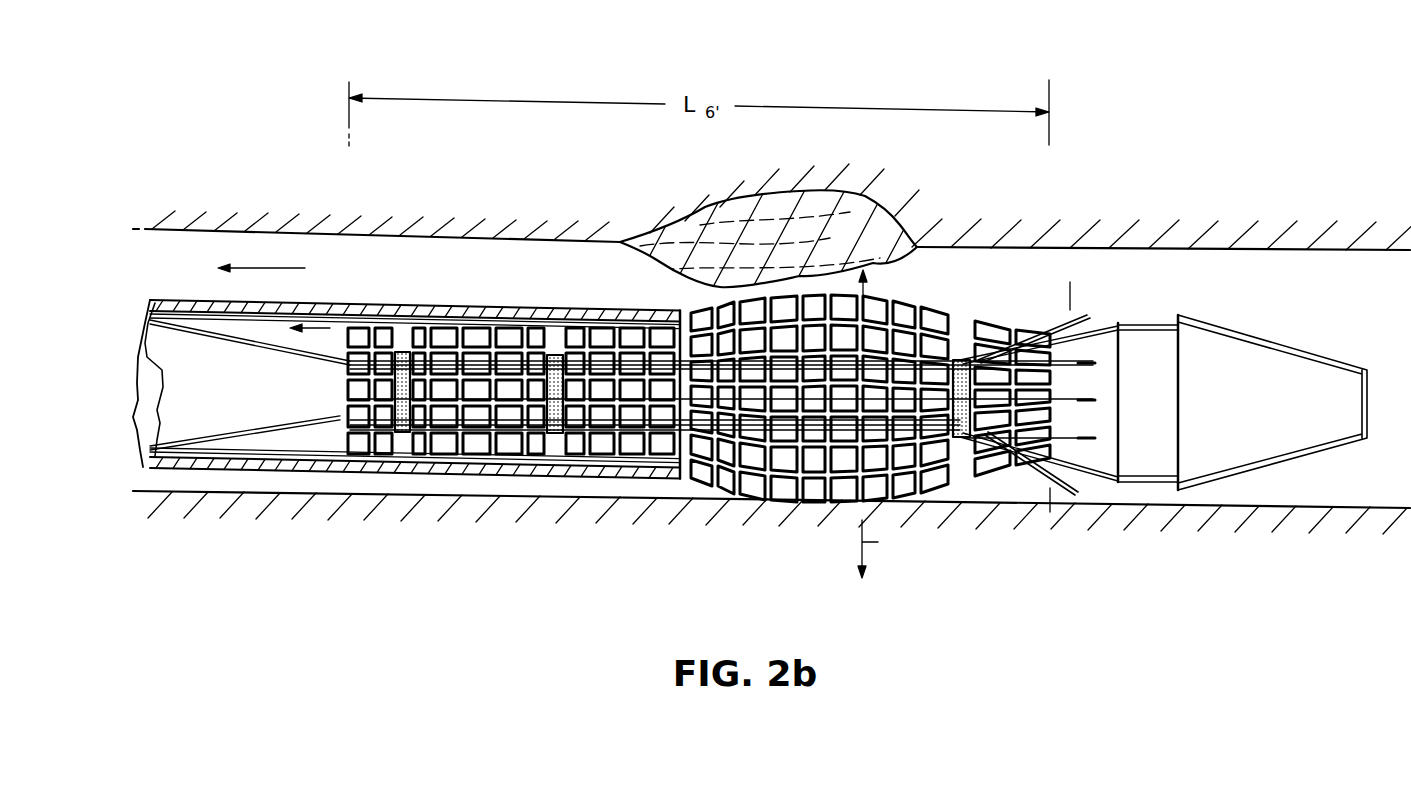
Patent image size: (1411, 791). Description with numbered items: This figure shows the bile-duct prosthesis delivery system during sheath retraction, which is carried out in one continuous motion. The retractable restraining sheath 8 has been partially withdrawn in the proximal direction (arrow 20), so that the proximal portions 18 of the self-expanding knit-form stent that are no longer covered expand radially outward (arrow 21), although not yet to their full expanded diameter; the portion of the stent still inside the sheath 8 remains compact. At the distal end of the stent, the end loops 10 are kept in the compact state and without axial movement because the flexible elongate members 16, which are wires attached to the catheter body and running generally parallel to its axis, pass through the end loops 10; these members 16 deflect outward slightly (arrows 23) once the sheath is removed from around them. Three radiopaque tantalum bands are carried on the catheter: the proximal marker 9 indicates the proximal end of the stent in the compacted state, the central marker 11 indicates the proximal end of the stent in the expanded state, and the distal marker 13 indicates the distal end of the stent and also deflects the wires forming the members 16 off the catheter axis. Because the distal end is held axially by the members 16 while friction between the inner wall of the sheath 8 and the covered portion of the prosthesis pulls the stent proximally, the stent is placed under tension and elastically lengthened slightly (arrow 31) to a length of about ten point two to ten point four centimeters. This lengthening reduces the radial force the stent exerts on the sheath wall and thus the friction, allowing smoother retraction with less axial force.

The retractable restraining sheath 8 is at (322, 472).
The proximal marker 9 is at (401, 440).
The end loops 10 is at (1050, 427).
The central marker 11 is at (557, 440).
The distal marker 13 is at (958, 440).
The flexible elongate members 16 is at (1133, 462).
The proximal portions 18 is at (938, 293).
The retraction arrow 20 is at (291, 262).
The expansion arrow 21 is at (912, 555).
The deflection arrows 23 is at (1050, 512).
The lengthening arrow 31 is at (330, 328).